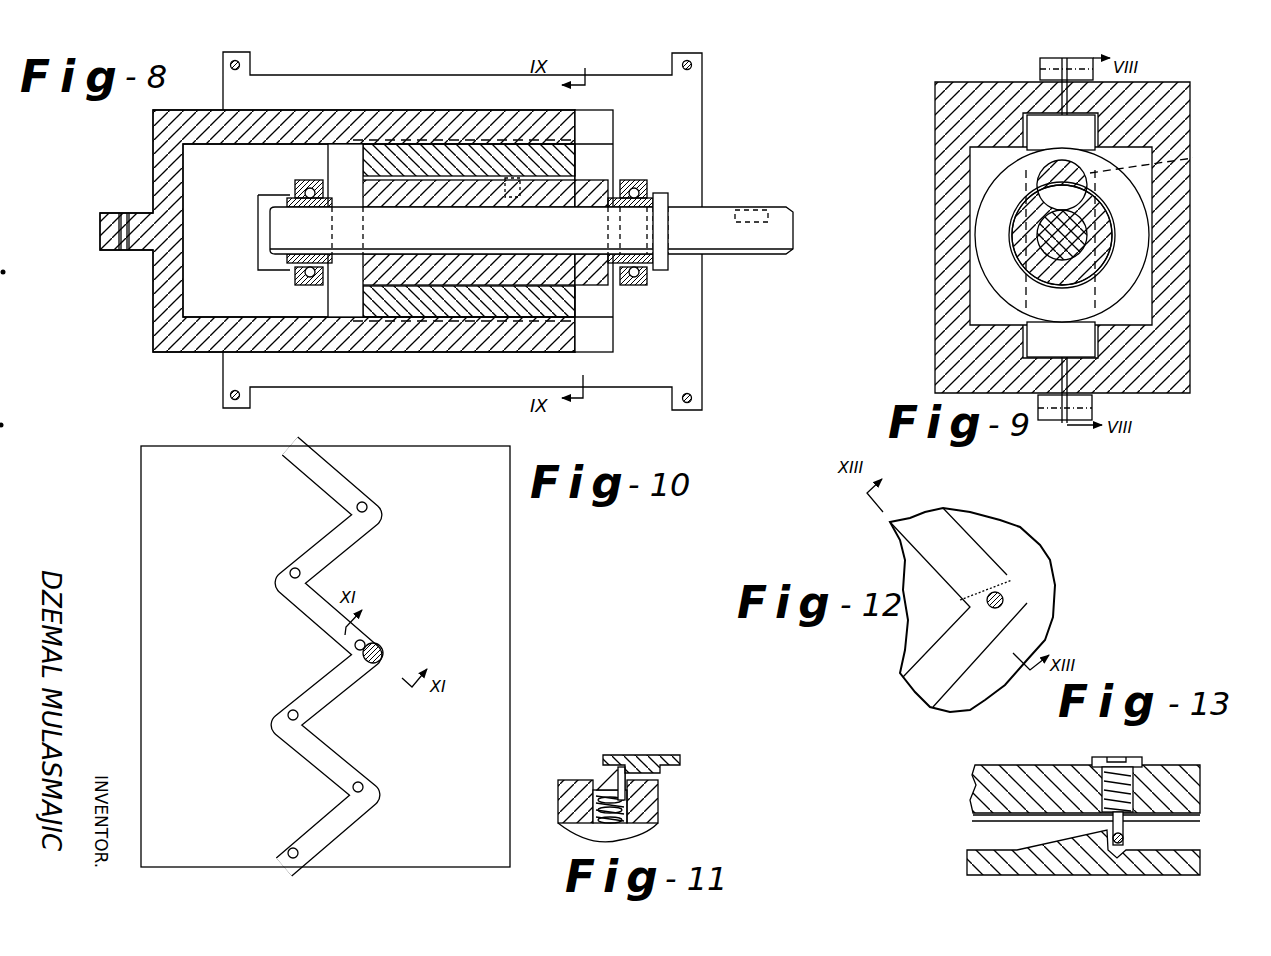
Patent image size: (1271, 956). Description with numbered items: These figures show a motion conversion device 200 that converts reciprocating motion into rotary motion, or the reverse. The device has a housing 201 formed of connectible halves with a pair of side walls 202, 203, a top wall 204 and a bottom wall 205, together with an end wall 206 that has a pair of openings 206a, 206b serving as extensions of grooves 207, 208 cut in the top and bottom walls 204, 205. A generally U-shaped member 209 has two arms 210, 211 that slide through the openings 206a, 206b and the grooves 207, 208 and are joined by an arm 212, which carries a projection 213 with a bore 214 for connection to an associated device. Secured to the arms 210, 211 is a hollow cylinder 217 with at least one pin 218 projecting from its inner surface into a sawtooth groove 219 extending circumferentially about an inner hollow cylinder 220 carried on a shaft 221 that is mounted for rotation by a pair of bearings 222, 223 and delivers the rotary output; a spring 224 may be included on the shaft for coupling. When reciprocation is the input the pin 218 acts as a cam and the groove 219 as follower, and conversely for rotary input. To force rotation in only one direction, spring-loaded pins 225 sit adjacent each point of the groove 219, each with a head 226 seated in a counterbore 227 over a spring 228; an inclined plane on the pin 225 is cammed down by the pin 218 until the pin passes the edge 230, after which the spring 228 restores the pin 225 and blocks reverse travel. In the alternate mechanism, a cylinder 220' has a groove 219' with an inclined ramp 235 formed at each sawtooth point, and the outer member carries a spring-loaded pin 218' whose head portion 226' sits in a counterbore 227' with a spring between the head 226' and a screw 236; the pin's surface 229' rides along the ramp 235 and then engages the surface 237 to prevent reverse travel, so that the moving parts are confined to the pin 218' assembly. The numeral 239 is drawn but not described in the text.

In FIG. 8, the motion conversion device 200 is at (716, 356).
In FIG. 8, the housing 201 is at (702, 342).
In FIG. 9, the housing 201 is at (937, 325).
In FIG. 9, the side wall 202 is at (940, 255).
In FIG. 9, the side wall 203 is at (1180, 245).
In FIG. 8, the top wall 204 is at (332, 92).
In FIG. 9, the top wall 204 is at (983, 97).
In FIG. 8, the bottom wall 205 is at (435, 373).
In FIG. 9, the bottom wall 205 is at (957, 370).
In FIG. 9, the end wall 206 is at (980, 173).
In FIG. 8, the opening 206a is at (258, 126).
In FIG. 8, the opening 206b is at (246, 350).
In FIG. 8, the groove 207 is at (600, 122).
In FIG. 9, the groove 207 is at (1100, 128).
In FIG. 8, the groove 208 is at (598, 347).
In FIG. 9, the groove 208 is at (1100, 346).
In FIG. 8, the U-shaped member 209 is at (152, 317).
In FIG. 8, the arm 210 is at (210, 118).
In FIG. 9, the arm 210 is at (1033, 137).
In FIG. 8, the arm 211 is at (213, 325).
In FIG. 9, the arm 211 is at (1067, 350).
In FIG. 8, the arm 212 is at (160, 175).
In FIG. 9, the arm 212 is at (1168, 160).
In FIG. 8, the projection 213 is at (146, 243).
In FIG. 8, the bore 214 is at (134, 200).
In FIG. 8, the hollow cylinder 217 is at (560, 150).
In FIG. 9, the hollow cylinder 217 is at (1133, 223).
In FIG. 11, the hollow cylinder 217 is at (653, 760).
In FIG. 8, the pin 218 is at (507, 154).
In FIG. 10, the pin 218 is at (402, 653).
In FIG. 11, the pin 218 is at (688, 775).
In FIG. 12, the spring-loaded pin 218' is at (1017, 576).
In FIG. 13, the spring-loaded pin 218' is at (1147, 837).
In FIG. 10, the groove 219 is at (338, 656).
In FIG. 12, the groove 219' is at (958, 607).
In FIG. 13, the groove 219' is at (1060, 833).
In FIG. 8, the hollow cylinder 220 is at (469, 214).
In FIG. 9, the hollow cylinder 220 is at (1127, 228).
In FIG. 10, the hollow cylinder 220 is at (358, 656).
In FIG. 11, the hollow cylinder 220 is at (569, 781).
In FIG. 12, the cylinder 220' is at (1003, 610).
In FIG. 8, the shaft 221 is at (537, 231).
In FIG. 9, the shaft 221 is at (1077, 240).
In FIG. 11, the shaft 221 is at (643, 826).
In FIG. 8, the bearing 222 is at (303, 180).
In FIG. 8, the bearing 223 is at (653, 190).
In FIG. 8, the spring 224 is at (750, 208).
In FIG. 10, the spring-loaded pin 225 is at (294, 567).
In FIG. 11, the spring-loaded pin 225 is at (592, 780).
In FIG. 13, the spring-loaded pin 225 is at (1125, 852).
In FIG. 11, the head 226 is at (657, 806).
In FIG. 13, the head portion 226' is at (1077, 773).
In FIG. 11, the counterbore 227 is at (566, 845).
In FIG. 13, the counterbore 227' is at (1086, 772).
In FIG. 11, the spring 228 is at (620, 833).
In FIG. 13, the surface 229' is at (1083, 875).
In FIG. 11, the edge 230 is at (620, 765).
In FIG. 12, the inclined ramp 235 is at (983, 565).
In FIG. 13, the inclined ramp 235 is at (1040, 845).
In FIG. 13, the screw 236 is at (1110, 748).
In FIG. 13, the surface 237 is at (1115, 850).
In FIG. 11, the sleeve wall 239 is at (600, 778).